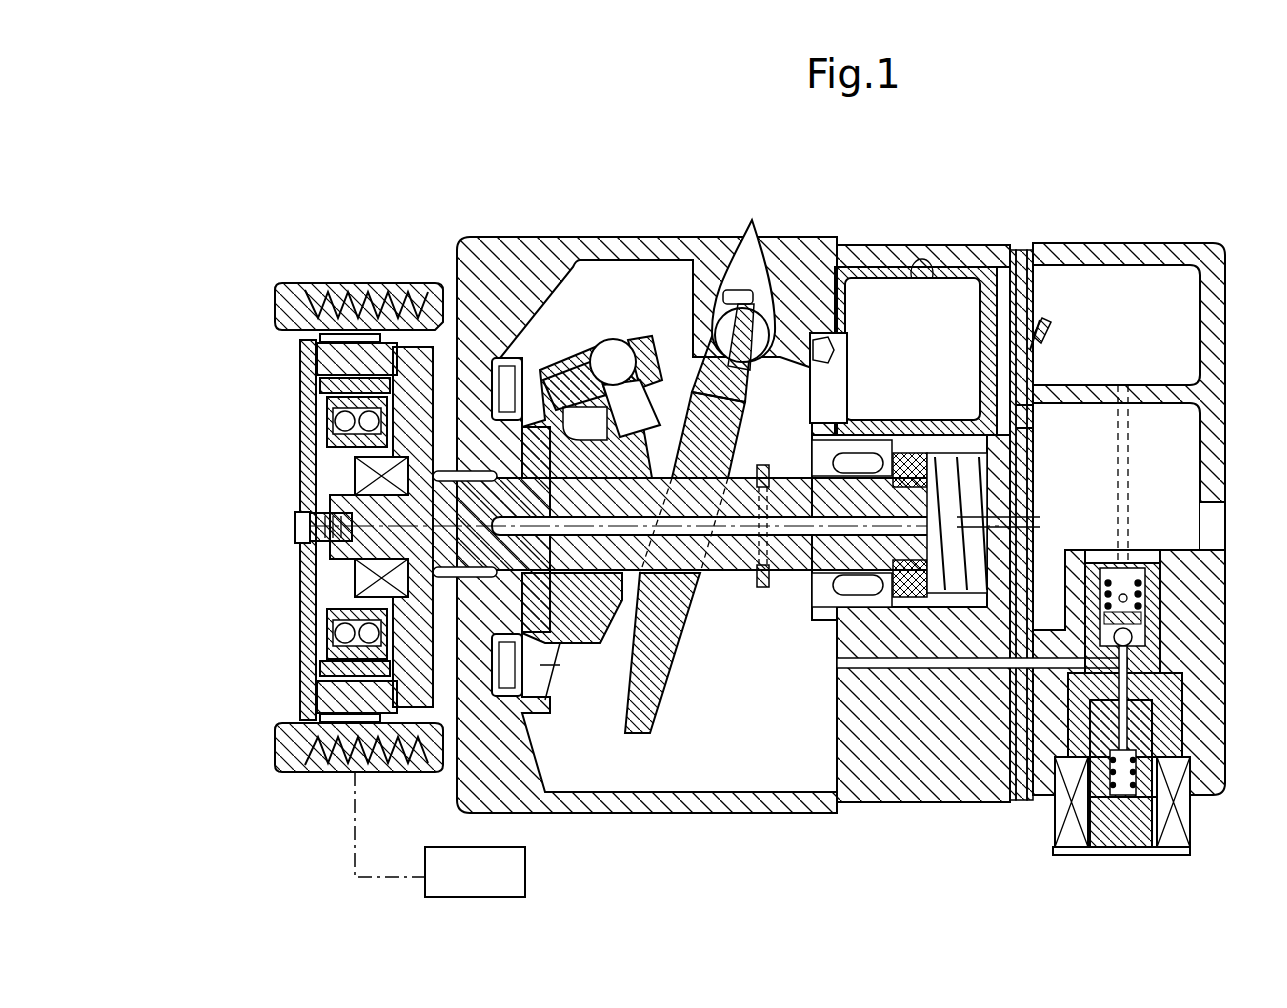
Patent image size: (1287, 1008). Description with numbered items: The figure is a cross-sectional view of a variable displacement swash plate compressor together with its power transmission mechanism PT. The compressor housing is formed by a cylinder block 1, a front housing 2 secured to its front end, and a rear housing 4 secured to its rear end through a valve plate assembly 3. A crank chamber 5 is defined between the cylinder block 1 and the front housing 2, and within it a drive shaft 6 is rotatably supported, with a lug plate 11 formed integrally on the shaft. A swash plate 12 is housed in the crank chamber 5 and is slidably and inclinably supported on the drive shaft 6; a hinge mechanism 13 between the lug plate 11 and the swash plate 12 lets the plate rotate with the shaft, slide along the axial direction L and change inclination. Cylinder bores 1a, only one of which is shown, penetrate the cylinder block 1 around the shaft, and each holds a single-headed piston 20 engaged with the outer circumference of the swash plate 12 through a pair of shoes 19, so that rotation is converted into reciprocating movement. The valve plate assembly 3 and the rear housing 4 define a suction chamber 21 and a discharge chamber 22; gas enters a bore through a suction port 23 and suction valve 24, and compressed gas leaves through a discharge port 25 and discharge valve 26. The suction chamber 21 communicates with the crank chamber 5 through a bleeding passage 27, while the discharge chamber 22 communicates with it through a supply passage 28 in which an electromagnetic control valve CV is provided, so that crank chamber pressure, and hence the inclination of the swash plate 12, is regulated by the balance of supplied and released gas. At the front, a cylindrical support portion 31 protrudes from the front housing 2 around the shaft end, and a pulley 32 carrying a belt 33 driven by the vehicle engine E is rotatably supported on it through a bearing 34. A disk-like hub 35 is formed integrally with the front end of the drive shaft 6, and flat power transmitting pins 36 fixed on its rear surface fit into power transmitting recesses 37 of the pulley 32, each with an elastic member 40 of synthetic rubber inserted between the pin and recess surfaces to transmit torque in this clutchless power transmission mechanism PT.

The cylinder block 1 is at (910, 802).
The cylinder bore 1a is at (925, 260).
The front housing 2 is at (655, 813).
The valve plate assembly 3 is at (1018, 800).
The rear housing 4 is at (1225, 662).
The crank chamber 5 is at (778, 737).
The drive shaft 6 is at (710, 573).
The lug plate 11 is at (548, 742).
The swash plate 12 is at (645, 735).
The hinge mechanism 13 is at (608, 332).
The shoes 19 is at (752, 235).
The single-headed piston 20 is at (866, 247).
The suction chamber 21 is at (1082, 490).
The discharge chamber 22 is at (1170, 359).
The suction port 23 is at (1033, 430).
The suction valve 24 is at (1033, 408).
The discharge port 25 is at (1040, 340).
The discharge valve 26 is at (1045, 318).
The bleeding passage 27 is at (1040, 527).
The supply passage 28 is at (837, 662).
The cylindrical support portion 31 is at (390, 432).
The pulley 32 is at (275, 306).
The belt 33 is at (338, 768).
The bearing 34 is at (327, 633).
The hub 35 is at (300, 598).
The power transmitting pin 36 is at (317, 358).
The power transmitting recess 37 is at (320, 338).
The elastic member 40 is at (320, 385).
The power transmission mechanism PT is at (286, 283).
The axial direction L is at (566, 671).
The vehicle engine E is at (528, 877).
The electromagnetic control valve CV is at (1186, 860).